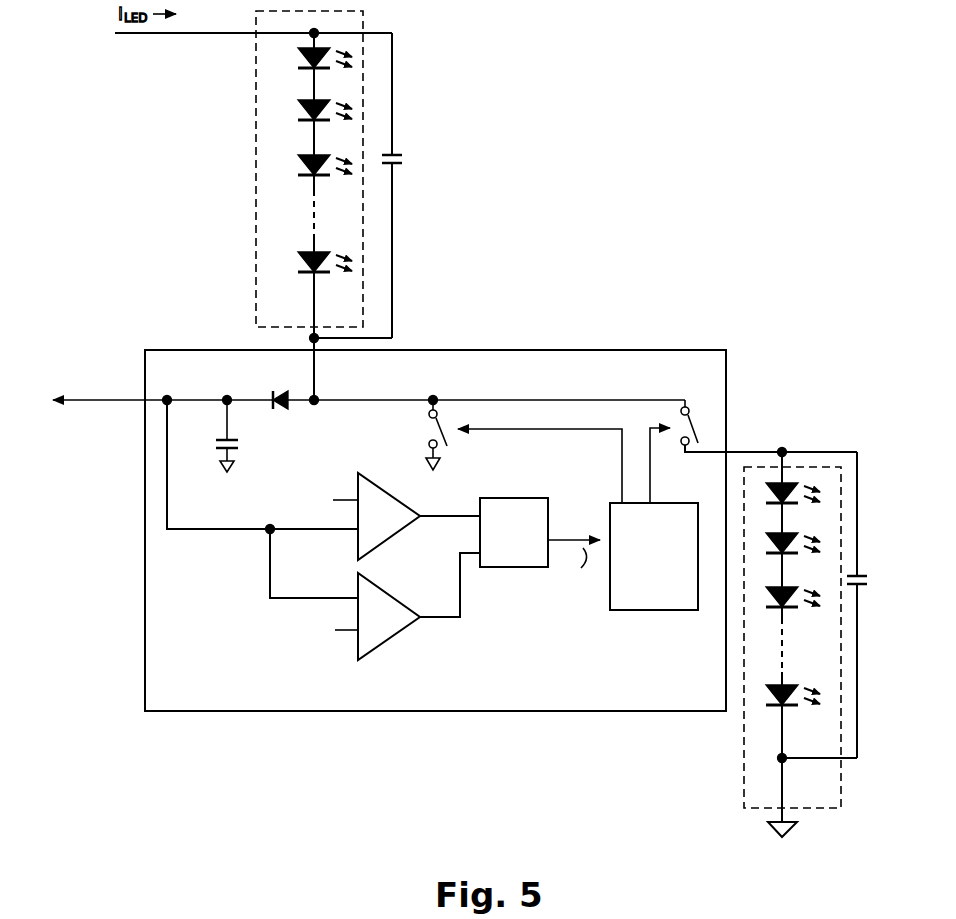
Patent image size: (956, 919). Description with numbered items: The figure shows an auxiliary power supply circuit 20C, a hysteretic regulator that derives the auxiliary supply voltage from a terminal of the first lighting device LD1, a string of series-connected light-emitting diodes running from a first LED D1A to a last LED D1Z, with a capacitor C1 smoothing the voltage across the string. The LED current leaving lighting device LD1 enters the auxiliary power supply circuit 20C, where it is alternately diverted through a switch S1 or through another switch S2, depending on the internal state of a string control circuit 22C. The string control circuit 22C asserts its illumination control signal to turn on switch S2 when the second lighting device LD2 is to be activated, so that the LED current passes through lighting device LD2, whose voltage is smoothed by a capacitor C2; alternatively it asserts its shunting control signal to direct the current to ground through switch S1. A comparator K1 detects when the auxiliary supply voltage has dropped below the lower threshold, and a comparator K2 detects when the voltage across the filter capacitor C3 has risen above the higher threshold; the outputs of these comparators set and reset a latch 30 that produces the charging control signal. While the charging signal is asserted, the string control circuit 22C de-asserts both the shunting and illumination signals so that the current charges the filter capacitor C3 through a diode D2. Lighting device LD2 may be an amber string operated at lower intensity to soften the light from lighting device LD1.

The first lighting device LD1 is at (311, 174).
The light-emitting diode D1A is at (311, 70).
The light-emitting diode D1Z is at (332, 233).
The capacitor C1 is at (405, 185).
The auxiliary power supply circuit 20C is at (455, 530).
The filter capacitor C3 is at (214, 436).
The diode D2 is at (285, 414).
The comparator K1 is at (383, 490).
The comparator K2 is at (383, 590).
The SR latch 30 is at (508, 498).
The string control circuit 22C is at (654, 556).
The switch S1 is at (421, 435).
The switch S2 is at (765, 415).
The capacitor C2 is at (871, 605).
The second lighting device LD2 is at (792, 644).